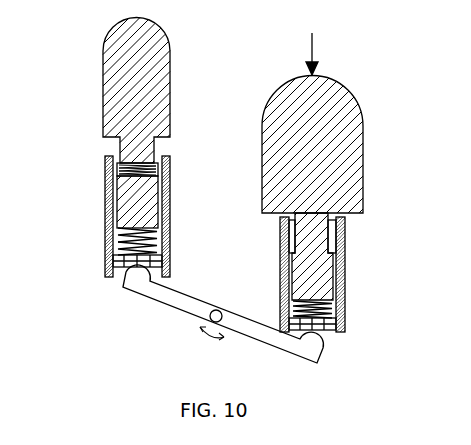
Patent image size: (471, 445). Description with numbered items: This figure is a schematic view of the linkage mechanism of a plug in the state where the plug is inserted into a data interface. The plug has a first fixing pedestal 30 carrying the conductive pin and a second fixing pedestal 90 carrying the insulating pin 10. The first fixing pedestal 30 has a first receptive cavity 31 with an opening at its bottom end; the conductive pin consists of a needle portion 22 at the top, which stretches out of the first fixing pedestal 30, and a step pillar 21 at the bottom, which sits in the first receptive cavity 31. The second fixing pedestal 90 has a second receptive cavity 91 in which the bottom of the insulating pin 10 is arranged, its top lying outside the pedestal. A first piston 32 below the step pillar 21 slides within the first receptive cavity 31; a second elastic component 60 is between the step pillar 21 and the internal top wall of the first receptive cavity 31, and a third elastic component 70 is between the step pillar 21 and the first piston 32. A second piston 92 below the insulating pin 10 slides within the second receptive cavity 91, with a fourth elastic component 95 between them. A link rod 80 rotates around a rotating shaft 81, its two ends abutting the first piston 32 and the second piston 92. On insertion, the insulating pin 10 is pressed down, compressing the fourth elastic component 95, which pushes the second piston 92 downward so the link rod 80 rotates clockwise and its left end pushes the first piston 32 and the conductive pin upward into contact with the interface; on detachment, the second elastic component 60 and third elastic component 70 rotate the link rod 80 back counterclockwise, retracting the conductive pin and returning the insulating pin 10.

The insulating pin 10 is at (317, 150).
The step pillar 21 is at (122, 192).
The needle portion 22 is at (138, 125).
The first fixing pedestal 30 is at (164, 244).
The first receptive cavity 31 is at (122, 240).
The first piston 32 is at (121, 262).
The second elastic component 60 is at (132, 172).
The third elastic component 70 is at (152, 239).
The link rod 80 is at (170, 298).
The rotating shaft 81 is at (210, 328).
The second fixing pedestal 90 is at (341, 279).
The second receptive cavity 91 is at (332, 241).
The second piston 92 is at (322, 323).
The fourth elastic component 95 is at (330, 304).